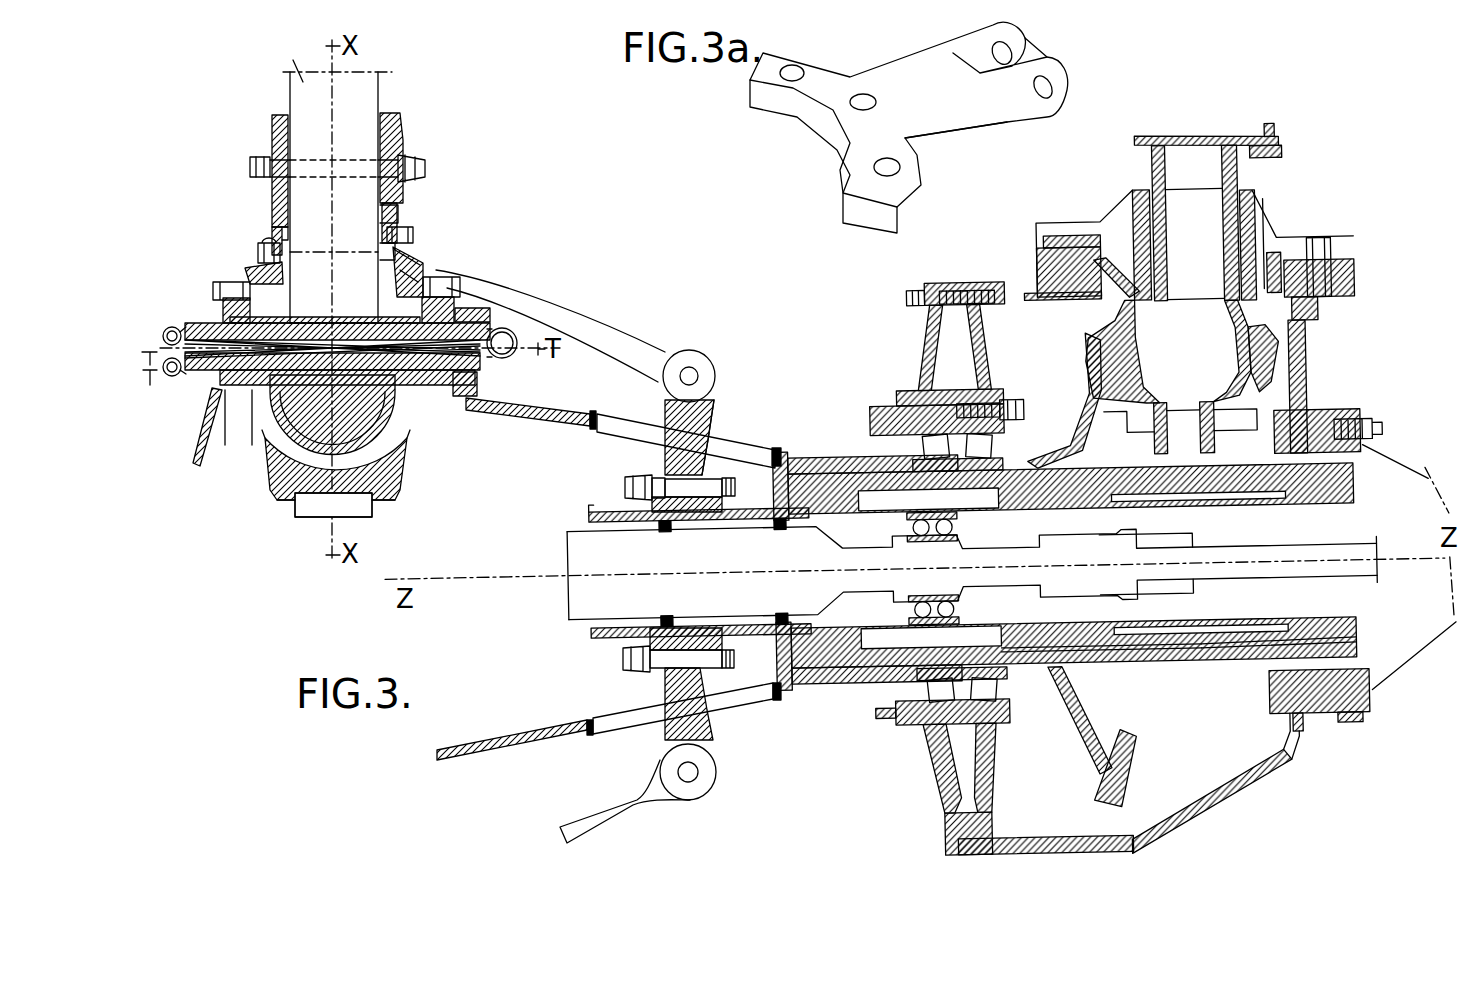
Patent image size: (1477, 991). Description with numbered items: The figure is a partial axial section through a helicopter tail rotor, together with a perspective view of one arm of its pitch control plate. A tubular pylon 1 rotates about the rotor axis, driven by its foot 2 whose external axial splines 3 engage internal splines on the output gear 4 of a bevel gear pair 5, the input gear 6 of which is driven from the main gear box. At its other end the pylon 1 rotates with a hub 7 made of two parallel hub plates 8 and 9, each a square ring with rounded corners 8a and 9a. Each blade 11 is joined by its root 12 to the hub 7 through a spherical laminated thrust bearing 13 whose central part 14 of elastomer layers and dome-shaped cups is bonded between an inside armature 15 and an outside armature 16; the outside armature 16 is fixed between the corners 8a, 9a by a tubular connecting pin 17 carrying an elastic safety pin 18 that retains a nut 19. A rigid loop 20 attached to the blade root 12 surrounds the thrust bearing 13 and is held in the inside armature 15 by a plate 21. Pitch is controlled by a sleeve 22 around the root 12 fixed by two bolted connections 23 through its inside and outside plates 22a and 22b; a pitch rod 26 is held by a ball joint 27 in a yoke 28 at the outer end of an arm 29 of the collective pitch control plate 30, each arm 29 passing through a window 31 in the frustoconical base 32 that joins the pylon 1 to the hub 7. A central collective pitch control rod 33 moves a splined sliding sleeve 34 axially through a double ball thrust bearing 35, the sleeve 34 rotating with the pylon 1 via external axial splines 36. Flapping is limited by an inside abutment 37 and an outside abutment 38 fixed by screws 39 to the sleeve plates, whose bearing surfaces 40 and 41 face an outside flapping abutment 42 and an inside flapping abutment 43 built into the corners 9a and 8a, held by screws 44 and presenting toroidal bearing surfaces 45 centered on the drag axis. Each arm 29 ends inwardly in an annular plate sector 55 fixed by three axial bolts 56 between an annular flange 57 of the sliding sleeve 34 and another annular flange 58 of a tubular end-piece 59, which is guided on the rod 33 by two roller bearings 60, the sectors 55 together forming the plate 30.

In FIG. 3, the tubular pylon 1 is at (813, 699).
In FIG. 3, the foot 2 is at (1123, 673).
In FIG. 3, the external axial splines 3 is at (1067, 678).
In FIG. 3, the output gear 4 is at (1133, 768).
In FIG. 3, the bevel gear pair 5 is at (1090, 377).
In FIG. 3, the input gear 6 is at (1267, 378).
In FIG. 3, the hub 7 is at (532, 400).
In FIG. 3, the hub plate 8 is at (435, 386).
In FIG. 3, the rounded corner 8a is at (462, 300).
In FIG. 3, the hub plate 9 is at (235, 418).
In FIG. 3, the rounded corner 9a is at (223, 307).
In FIG. 3, the blade 11 is at (383, 84).
In FIG. 3, the blade root 12 is at (291, 58).
In FIG. 3, the spherical laminated thrust bearing 13 is at (412, 473).
In FIG. 3, the central part 14 is at (295, 433).
In FIG. 3, the inside armature 15 is at (293, 480).
In FIG. 3, the outside armature 16 is at (409, 440).
In FIG. 3, the connecting pin 17 is at (470, 395).
In FIG. 3, the elastic safety pin 18 is at (514, 354).
In FIG. 3, the nut 19 is at (205, 322).
In FIG. 3, the rigid loop 20 is at (400, 208).
In FIG. 3, the plate 21 is at (378, 505).
In FIG. 3, the sleeve 22 is at (263, 146).
In FIG. 3, the inside plate 22a is at (403, 123).
In FIG. 3, the outside plate 22b is at (273, 113).
In FIG. 3, the bolted connections 23 is at (430, 159).
In FIG. 3, the pitch rod 26 is at (620, 343).
In FIG. 3, the ball joint 27 is at (690, 372).
In FIG. 3, the yoke 28 is at (687, 443).
In FIG. 3A, the yoke 28 is at (1062, 73).
In FIG. 3, the arm 29 is at (705, 456).
In FIG. 3A, the arm 29 is at (953, 133).
In FIG. 3, the collective pitch control plate 30 is at (643, 688).
In FIG. 3, the window 31 is at (616, 418).
In FIG. 3, the frustoconical base 32 is at (478, 745).
In FIG. 3, the collective pitch control rod 33 is at (1307, 561).
In FIG. 3, the sliding sleeve 34 is at (787, 642).
In FIG. 3, the double ball thrust bearing 35 is at (908, 618).
In FIG. 3, the external axial splines 36 is at (1250, 642).
In FIG. 3, the inside abutment 37 is at (353, 267).
In FIG. 3, the outside abutment 38 is at (258, 262).
In FIG. 3, the screws 39 is at (405, 230).
In FIG. 3, the bearing surface 40 is at (290, 282).
In FIG. 3, the bearing surface 41 is at (414, 262).
In FIG. 3, the outside flapping abutment 42 is at (237, 283).
In FIG. 3, the inside flapping abutment 43 is at (447, 300).
In FIG. 3, the screws 44 is at (460, 288).
In FIG. 3, the bearing surface 45 is at (250, 285).
In FIG. 3, the annular plate sector 55 is at (677, 507).
In FIG. 3A, the annular plate sector 55 is at (870, 140).
In FIG. 3, the axial bolts 56 is at (677, 487).
In FIG. 3, the annular flange 57 is at (730, 496).
In FIG. 3, the annular flange 58 is at (653, 468).
In FIG. 3, the tubular end-piece 59 is at (590, 512).
In FIG. 3, the roller bearings 60 is at (777, 534).